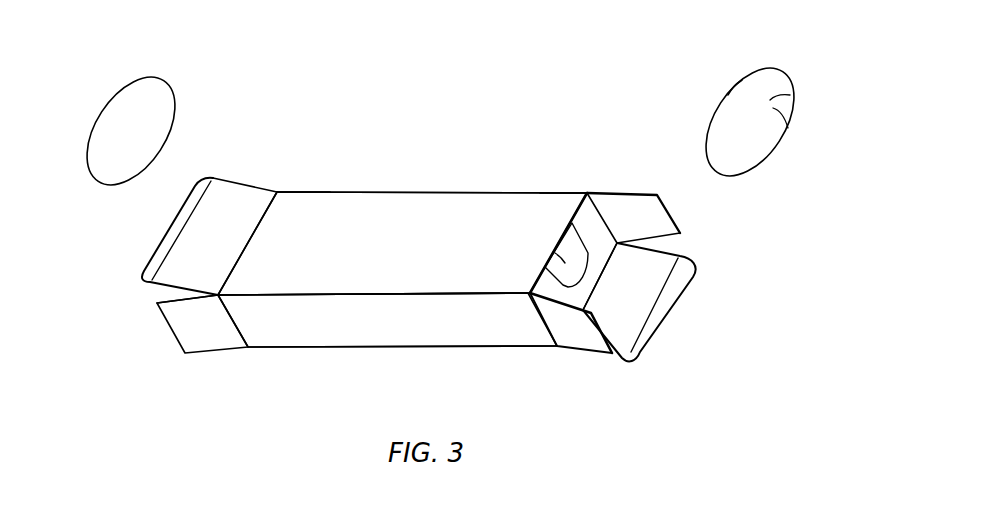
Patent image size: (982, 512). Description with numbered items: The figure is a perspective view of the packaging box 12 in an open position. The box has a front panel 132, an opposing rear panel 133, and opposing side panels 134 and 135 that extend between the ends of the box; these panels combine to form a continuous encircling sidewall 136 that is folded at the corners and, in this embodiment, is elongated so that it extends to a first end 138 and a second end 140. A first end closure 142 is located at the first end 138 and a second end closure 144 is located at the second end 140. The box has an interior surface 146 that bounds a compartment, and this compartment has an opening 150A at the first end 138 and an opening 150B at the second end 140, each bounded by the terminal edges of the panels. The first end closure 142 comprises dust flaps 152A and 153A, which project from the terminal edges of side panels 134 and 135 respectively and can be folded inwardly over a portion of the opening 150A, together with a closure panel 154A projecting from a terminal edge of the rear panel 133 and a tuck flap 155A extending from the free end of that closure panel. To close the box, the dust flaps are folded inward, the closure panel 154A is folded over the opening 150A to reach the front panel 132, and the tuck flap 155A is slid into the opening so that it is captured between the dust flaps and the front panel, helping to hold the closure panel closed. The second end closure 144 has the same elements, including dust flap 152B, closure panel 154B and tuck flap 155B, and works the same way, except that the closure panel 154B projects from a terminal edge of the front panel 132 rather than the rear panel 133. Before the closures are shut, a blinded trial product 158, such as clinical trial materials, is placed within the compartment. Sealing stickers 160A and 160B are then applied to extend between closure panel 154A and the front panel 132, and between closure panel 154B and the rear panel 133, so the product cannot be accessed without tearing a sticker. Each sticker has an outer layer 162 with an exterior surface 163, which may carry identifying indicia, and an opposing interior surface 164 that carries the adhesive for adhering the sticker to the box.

The packaging box 12 is at (445, 138).
The front panel 132 is at (327, 213).
The rear panel 133 is at (488, 348).
The side panel 134 is at (362, 333).
The side panel 135 is at (513, 192).
The sidewall 136 is at (312, 278).
The first end 138 is at (611, 163).
The second end 140 is at (283, 148).
The first end closure 142 is at (701, 295).
The second end closure 144 is at (116, 232).
The interior surface 146 is at (595, 257).
The opening 150A is at (610, 258).
The opening 150B is at (173, 295).
The dust flap 152A is at (582, 335).
The dust flap 152B is at (213, 350).
The dust flap 153A is at (647, 197).
The closure panel 154A is at (630, 307).
The closure panel 154B is at (240, 200).
The tuck flap 155A is at (675, 297).
The tuck flap 155B is at (167, 230).
The blinded trial product 158 is at (558, 255).
The sealing sticker 160A is at (772, 77).
The sealing sticker 160B is at (143, 95).
The outer layer 162 is at (788, 128).
The exterior surface 163 is at (790, 95).
The interior surface 164 is at (733, 85).